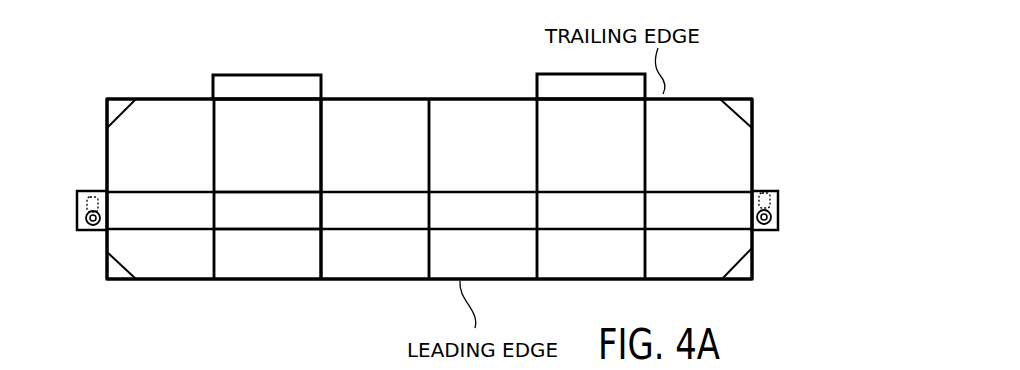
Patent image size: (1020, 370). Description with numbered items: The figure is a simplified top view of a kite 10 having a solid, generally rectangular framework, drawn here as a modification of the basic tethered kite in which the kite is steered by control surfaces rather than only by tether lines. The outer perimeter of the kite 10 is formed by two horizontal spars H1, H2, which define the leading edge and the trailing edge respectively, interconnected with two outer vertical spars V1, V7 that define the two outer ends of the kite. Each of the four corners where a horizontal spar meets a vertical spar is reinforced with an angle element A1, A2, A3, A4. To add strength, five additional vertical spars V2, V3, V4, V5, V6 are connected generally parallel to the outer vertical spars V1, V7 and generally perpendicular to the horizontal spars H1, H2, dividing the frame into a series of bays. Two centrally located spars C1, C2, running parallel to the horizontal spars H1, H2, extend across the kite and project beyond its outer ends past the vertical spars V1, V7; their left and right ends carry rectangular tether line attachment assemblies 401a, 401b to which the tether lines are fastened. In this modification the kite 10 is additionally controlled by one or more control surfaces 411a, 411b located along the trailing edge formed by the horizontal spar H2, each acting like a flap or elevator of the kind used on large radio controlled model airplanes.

The kite 10 is at (328, 61).
The tether line attachment assembly 401a is at (77, 212).
The tether line attachment assembly 401b is at (778, 208).
The control surface 411a is at (321, 80).
The control surface 411b is at (537, 88).
The angle element A1 is at (124, 111).
The angle element A2 is at (747, 98).
The angle element A3 is at (122, 281).
The angle element A4 is at (735, 259).
The vertical spar V1 is at (108, 165).
The additional vertical spar V2 is at (214, 168).
The additional vertical spar V3 is at (323, 167).
The additional vertical spar V4 is at (431, 167).
The additional vertical spar V5 is at (539, 167).
The additional vertical spar V6 is at (647, 167).
The vertical spar V7 is at (752, 147).
The horizontal spar H1 is at (383, 281).
The horizontal spar H2 is at (178, 98).
The central spar C1 is at (250, 192).
The central spar C2 is at (298, 230).